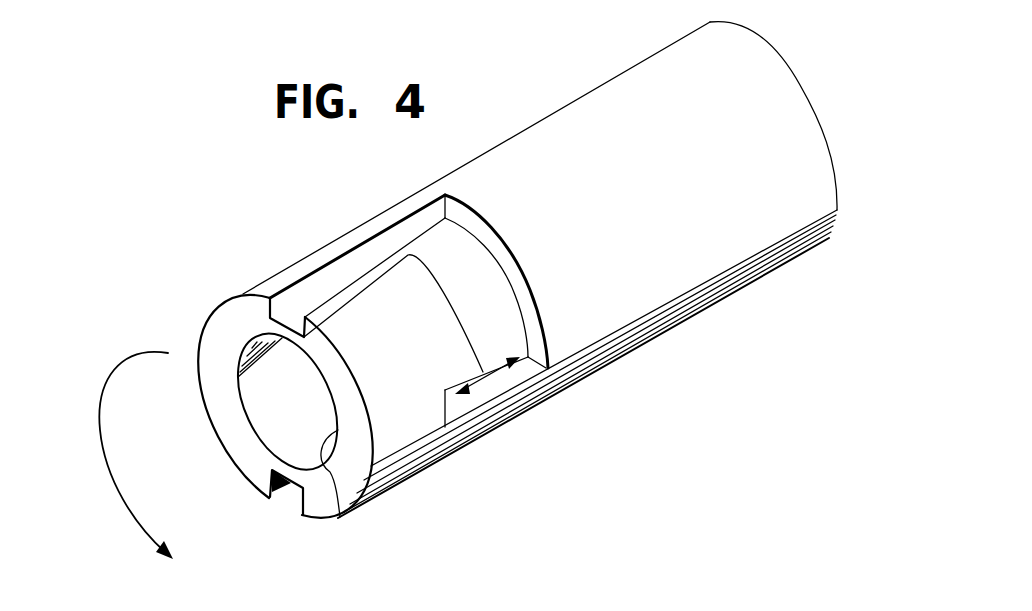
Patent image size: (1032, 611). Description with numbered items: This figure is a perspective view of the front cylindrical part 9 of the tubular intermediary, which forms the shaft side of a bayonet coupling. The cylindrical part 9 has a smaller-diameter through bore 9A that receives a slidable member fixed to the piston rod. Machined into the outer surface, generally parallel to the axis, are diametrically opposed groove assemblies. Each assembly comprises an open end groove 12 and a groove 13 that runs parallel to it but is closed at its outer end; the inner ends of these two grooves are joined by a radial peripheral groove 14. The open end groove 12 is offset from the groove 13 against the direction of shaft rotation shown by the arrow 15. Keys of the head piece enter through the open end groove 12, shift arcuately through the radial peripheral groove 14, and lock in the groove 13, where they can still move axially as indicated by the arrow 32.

The cylindrical part 9 is at (628, 307).
The through bore 9A is at (325, 450).
The open end groove 12 is at (317, 277).
The groove 13 is at (460, 410).
The radial peripheral groove 14 is at (467, 250).
The arrow 15 is at (102, 450).
The arrow 32 is at (503, 367).